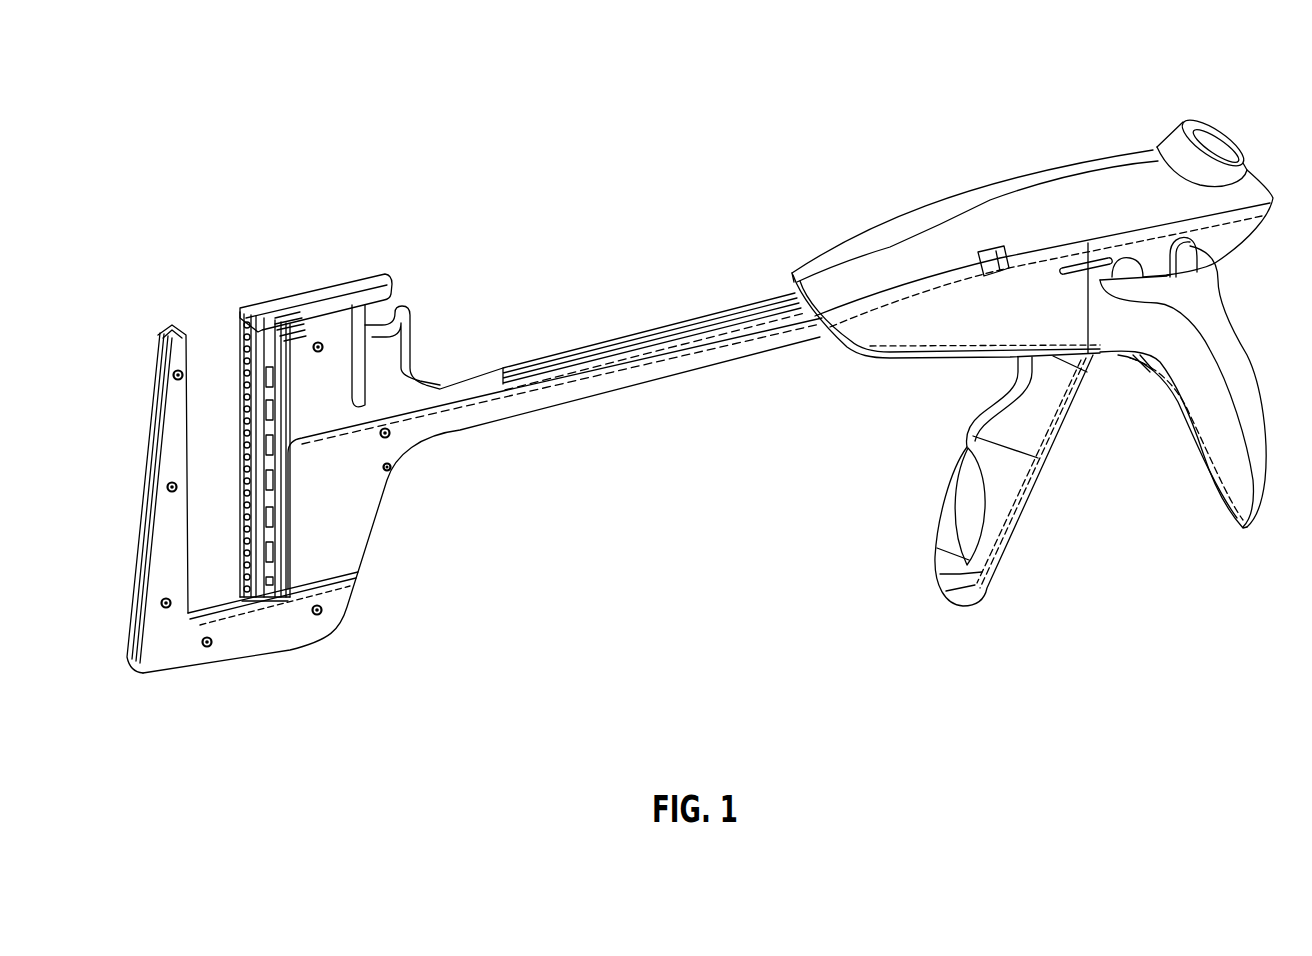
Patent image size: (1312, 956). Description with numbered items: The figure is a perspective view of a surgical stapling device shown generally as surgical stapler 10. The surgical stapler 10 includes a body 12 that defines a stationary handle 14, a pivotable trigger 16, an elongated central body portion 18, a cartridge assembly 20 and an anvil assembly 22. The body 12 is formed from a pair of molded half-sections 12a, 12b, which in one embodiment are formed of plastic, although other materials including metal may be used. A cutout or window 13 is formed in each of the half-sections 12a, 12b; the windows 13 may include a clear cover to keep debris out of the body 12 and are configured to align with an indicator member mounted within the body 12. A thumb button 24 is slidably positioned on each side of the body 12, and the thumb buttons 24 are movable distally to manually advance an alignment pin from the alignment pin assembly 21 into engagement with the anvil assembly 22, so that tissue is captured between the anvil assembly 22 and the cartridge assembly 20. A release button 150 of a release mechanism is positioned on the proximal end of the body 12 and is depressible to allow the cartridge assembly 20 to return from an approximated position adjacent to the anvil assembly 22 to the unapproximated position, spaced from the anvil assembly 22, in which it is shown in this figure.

The surgical stapler 10 is at (682, 153).
The body 12 is at (1040, 261).
The half-section 12a is at (920, 268).
The half-section 12b is at (886, 232).
The window 13 is at (990, 257).
The stationary handle 14 is at (1200, 450).
The pivotable trigger 16 is at (950, 526).
The elongated central body portion 18 is at (605, 343).
The cartridge assembly 20 is at (240, 390).
The alignment pin assembly 21 is at (393, 287).
The anvil assembly 22 is at (157, 380).
The thumb button 24 is at (1190, 250).
The release button 150 is at (1213, 140).